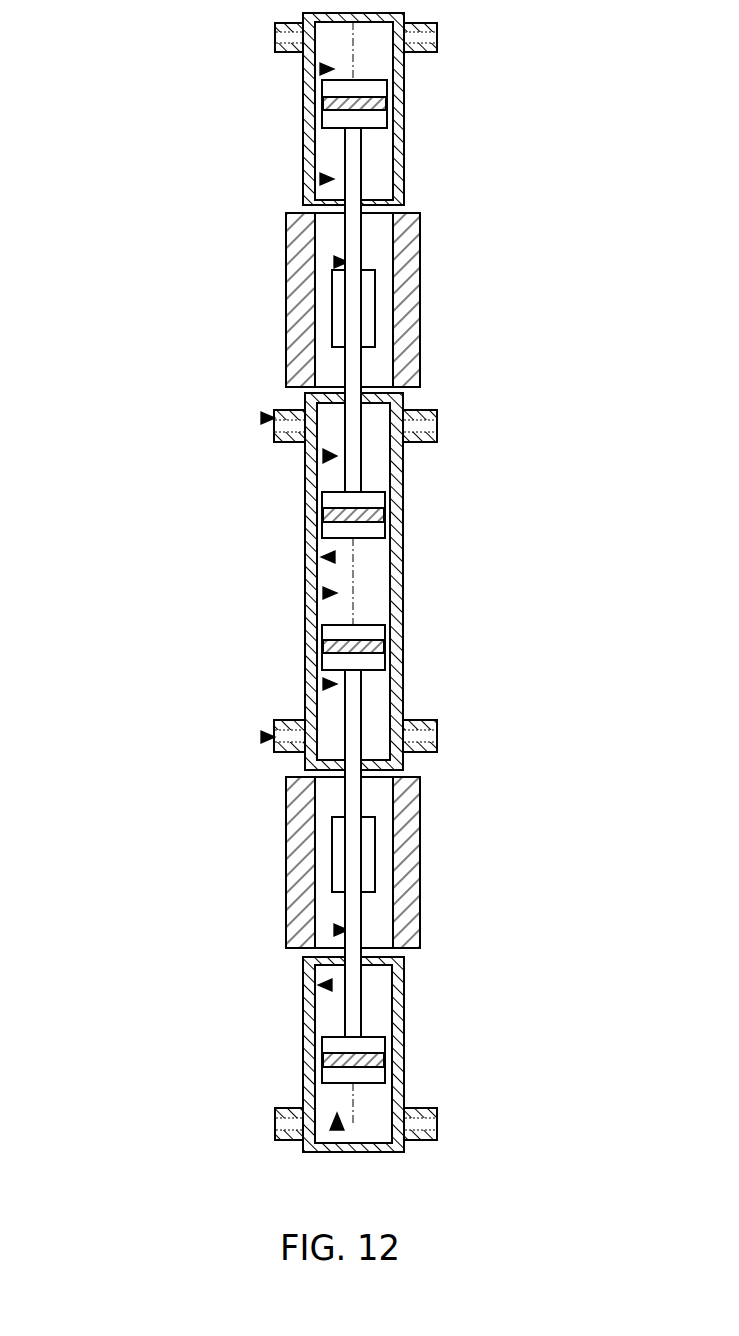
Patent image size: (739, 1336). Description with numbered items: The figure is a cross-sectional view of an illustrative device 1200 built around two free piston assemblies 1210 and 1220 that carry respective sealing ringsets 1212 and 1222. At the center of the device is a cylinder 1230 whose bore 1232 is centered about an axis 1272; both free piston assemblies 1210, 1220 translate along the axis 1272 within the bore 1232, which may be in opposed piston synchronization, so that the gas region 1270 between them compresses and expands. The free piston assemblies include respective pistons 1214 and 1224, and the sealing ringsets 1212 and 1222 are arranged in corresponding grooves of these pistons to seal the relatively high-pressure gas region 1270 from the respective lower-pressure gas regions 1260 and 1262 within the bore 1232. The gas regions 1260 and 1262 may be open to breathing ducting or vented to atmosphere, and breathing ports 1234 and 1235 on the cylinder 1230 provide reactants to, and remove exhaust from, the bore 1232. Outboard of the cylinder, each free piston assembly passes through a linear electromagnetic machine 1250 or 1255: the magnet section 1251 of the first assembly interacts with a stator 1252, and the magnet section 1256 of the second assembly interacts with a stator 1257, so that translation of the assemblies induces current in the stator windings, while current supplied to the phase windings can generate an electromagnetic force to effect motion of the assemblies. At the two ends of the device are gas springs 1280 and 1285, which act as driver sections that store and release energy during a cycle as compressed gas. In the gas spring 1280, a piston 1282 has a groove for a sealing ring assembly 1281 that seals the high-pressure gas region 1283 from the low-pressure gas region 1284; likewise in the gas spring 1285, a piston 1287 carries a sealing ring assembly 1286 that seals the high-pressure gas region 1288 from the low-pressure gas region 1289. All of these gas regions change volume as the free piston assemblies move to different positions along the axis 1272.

The device 1200 is at (88, 209).
The gas spring 1280 is at (522, 197).
The sealing ring assembly 1281 is at (404, 100).
The piston 1282 is at (404, 132).
The gas region 1283 is at (320, 68).
The gas region 1284 is at (320, 178).
The linear electromagnetic machine 1250 is at (367, 300).
The free piston assembly 1210 is at (334, 262).
The magnet section 1251 is at (333, 318).
The stator 1252 is at (286, 363).
The cylinder 1230 is at (400, 605).
The breathing port 1235 is at (261, 418).
The gas region 1260 is at (323, 454).
The sealing ringset 1212 is at (403, 507).
The piston 1214 is at (312, 541).
The bore 1232 is at (335, 557).
The gas region 1270 is at (323, 593).
The sealing ringset 1222 is at (403, 644).
The piston 1224 is at (318, 647).
The gas region 1262 is at (323, 684).
The breathing port 1234 is at (261, 737).
The linear electromagnetic machine 1255 is at (368, 862).
The magnet section 1256 is at (332, 852).
The stator 1257 is at (286, 880).
The free piston assembly 1220 is at (334, 930).
The gas spring 1285 is at (534, 1153).
The sealing ring assembly 1286 is at (404, 1058).
The piston 1287 is at (318, 1042).
The axis 1272 is at (355, 1097).
The gas region 1289 is at (318, 985).
The gas region 1288 is at (333, 1130).